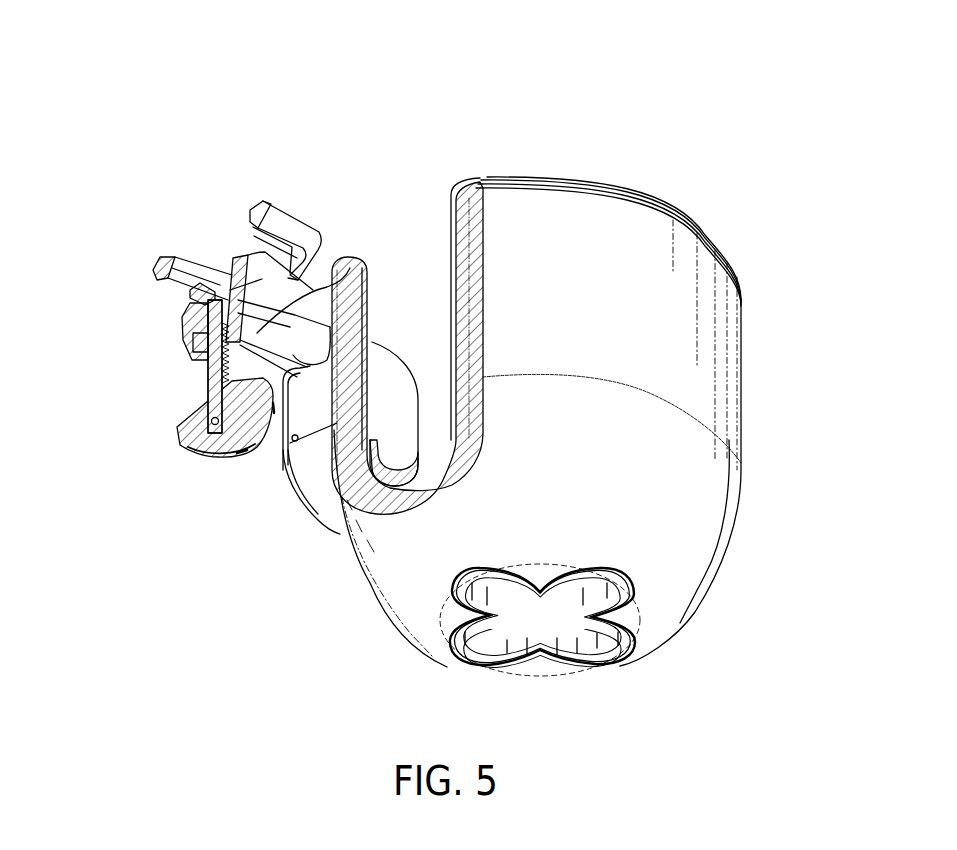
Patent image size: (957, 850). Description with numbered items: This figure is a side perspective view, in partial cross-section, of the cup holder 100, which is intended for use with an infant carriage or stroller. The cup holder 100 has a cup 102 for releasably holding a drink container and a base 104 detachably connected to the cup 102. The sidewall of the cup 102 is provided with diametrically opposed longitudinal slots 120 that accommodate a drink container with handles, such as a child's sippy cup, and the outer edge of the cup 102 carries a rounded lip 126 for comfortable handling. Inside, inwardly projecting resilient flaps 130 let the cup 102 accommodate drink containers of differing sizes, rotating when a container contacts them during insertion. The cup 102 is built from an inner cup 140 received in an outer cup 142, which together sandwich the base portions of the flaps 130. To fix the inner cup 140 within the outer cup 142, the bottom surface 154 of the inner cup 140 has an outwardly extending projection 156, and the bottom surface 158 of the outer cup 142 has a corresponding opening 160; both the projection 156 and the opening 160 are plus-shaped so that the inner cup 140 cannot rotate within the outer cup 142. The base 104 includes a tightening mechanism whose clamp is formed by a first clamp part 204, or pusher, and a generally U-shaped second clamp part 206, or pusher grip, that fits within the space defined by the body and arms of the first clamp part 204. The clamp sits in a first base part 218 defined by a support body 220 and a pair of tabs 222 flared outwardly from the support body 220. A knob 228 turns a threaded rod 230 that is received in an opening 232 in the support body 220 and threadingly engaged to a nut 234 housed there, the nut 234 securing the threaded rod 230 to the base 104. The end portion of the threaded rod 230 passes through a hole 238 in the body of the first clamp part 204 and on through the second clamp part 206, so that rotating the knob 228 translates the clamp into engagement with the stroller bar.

The cup holder 100 is at (467, 373).
The cup 102 is at (578, 431).
The base 104 is at (204, 348).
The longitudinal slots 120 is at (453, 333).
The rounded lip 126 is at (588, 178).
The resilient flaps 130 is at (390, 405).
The inner cup 140 is at (529, 625).
The outer cup 142 is at (716, 515).
The bottom surface of the inner cup 154 is at (503, 584).
The projection 156 is at (594, 650).
The bottom surface of the outer cup 158 is at (543, 662).
The opening 160 is at (464, 658).
The first clamp part 204 is at (200, 294).
The second clamp part 206 is at (236, 262).
The first base part 218 is at (280, 342).
The support body 220 is at (350, 269).
The tabs 222 is at (287, 207).
The knob 228 is at (212, 458).
The threaded rod 230 is at (207, 391).
The opening 232 is at (200, 367).
The nut 234 is at (193, 345).
The hole 238 is at (190, 310).